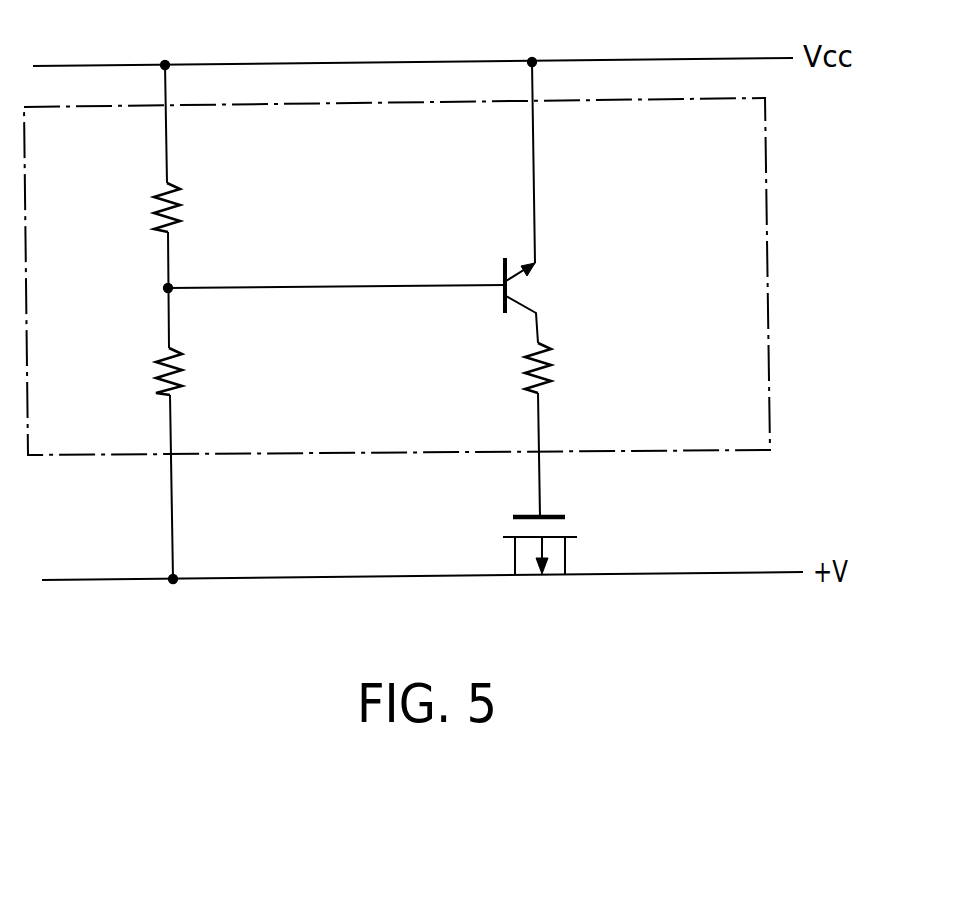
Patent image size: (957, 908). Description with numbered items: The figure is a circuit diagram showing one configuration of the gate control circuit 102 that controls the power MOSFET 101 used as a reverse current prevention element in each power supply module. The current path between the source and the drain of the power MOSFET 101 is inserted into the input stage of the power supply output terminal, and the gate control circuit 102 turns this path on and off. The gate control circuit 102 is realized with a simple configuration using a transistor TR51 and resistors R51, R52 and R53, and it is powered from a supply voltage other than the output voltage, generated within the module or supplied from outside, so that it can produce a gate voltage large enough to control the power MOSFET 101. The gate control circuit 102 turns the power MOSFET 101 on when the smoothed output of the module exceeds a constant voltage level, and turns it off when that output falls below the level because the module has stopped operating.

The resistor R51 is at (150, 203).
The resistor R52 is at (156, 371).
The resistor R53 is at (522, 369).
The transistor TR51 is at (512, 248).
The power MOSFET 101 is at (578, 520).
The gate control circuit 102 is at (766, 184).